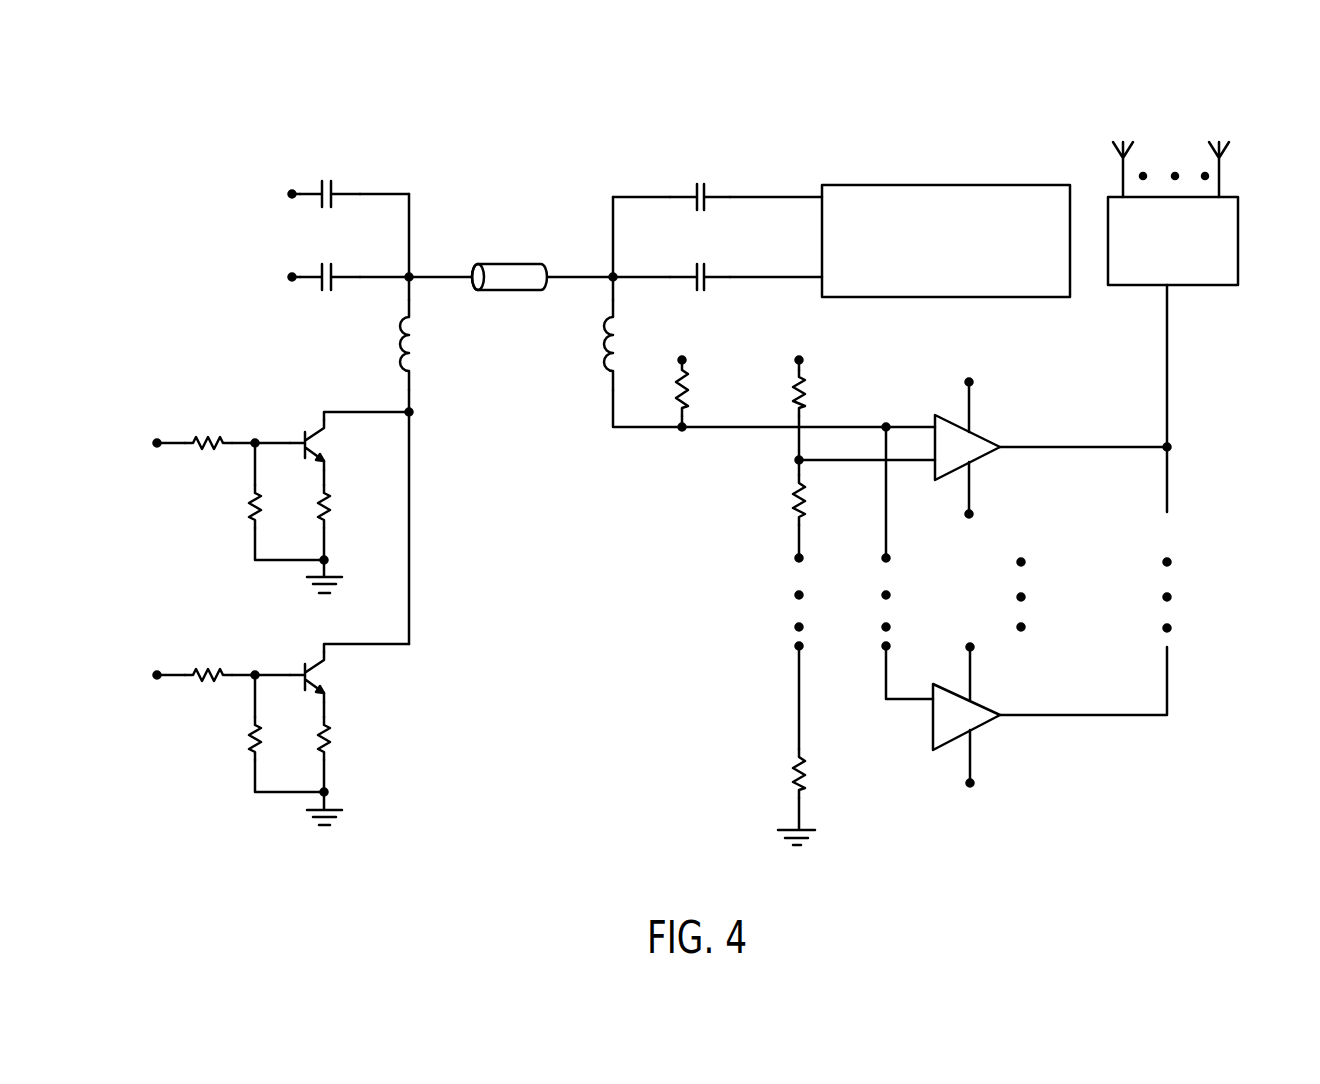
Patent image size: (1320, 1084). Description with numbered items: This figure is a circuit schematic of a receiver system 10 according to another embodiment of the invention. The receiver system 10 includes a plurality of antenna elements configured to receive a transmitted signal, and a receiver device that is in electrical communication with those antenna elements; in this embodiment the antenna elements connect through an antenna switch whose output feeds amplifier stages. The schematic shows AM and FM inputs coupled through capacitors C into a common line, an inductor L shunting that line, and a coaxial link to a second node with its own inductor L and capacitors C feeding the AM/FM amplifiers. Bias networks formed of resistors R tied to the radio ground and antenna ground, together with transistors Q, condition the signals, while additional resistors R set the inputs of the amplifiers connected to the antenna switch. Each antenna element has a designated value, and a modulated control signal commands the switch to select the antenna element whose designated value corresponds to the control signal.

The receiver system 10 is at (813, 130).
The capacitor C is at (515, 221).
The inductor L is at (517, 345).
The resistor R is at (507, 580).
The transistor Q is at (318, 561).